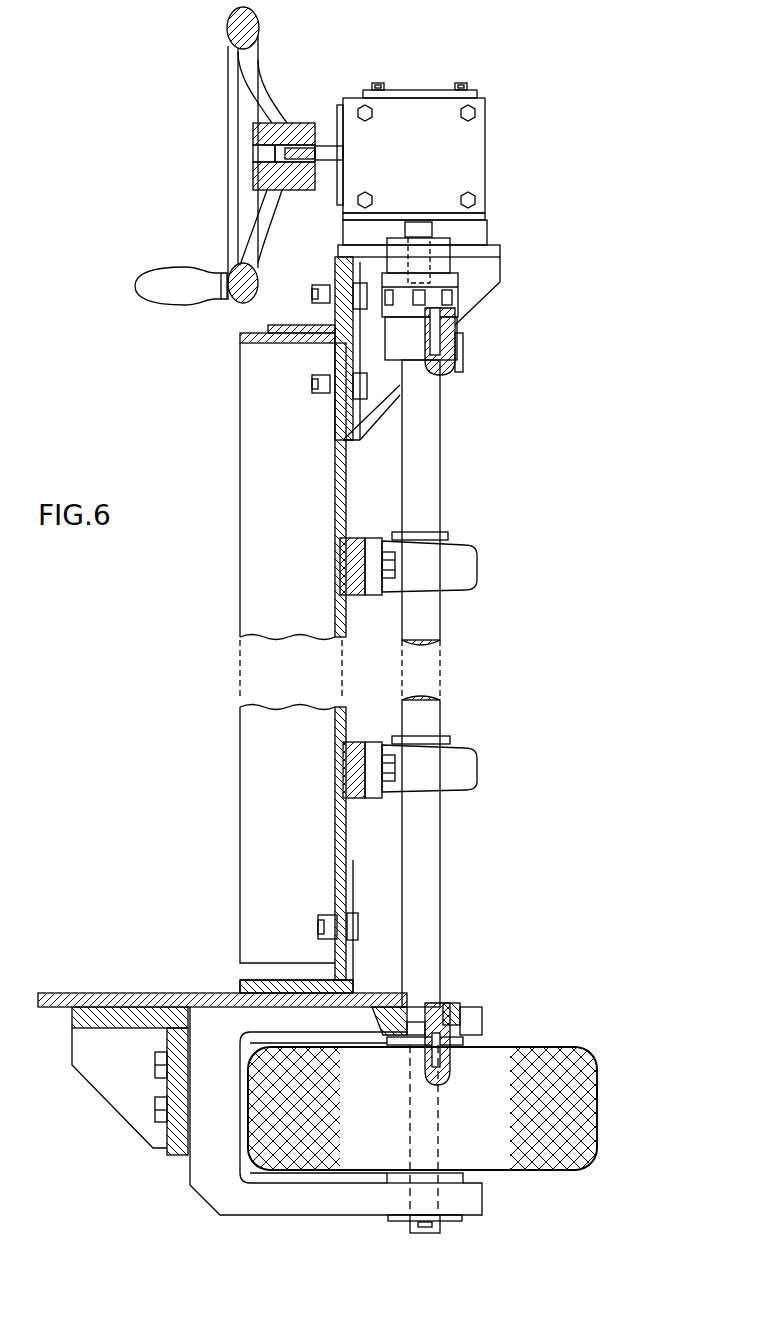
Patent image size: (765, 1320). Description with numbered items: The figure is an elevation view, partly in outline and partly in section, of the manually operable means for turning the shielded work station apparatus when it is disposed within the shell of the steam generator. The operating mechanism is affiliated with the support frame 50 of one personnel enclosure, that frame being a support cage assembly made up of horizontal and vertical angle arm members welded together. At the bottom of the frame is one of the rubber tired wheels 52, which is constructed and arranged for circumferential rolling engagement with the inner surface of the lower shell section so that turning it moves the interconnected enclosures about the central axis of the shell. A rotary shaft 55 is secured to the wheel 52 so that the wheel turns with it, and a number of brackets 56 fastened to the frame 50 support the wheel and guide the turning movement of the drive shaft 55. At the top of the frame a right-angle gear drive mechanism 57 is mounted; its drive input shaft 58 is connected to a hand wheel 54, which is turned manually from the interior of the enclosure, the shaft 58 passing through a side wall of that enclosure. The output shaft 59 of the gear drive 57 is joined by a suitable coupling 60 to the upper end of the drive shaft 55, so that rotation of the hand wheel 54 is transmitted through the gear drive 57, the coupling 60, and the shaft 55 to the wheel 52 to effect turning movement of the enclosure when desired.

The support cage assembly 50 is at (350, 896).
The rubber tired wheel 52 is at (516, 1048).
The hand wheel 54 is at (258, 23).
The rotary shaft 55 is at (432, 613).
The bracket 56 is at (465, 562).
The right-angle gear drive mechanism 57 is at (478, 152).
The drive input shaft 58 is at (330, 158).
The output shaft 59 is at (445, 247).
The coupling 60 is at (437, 290).